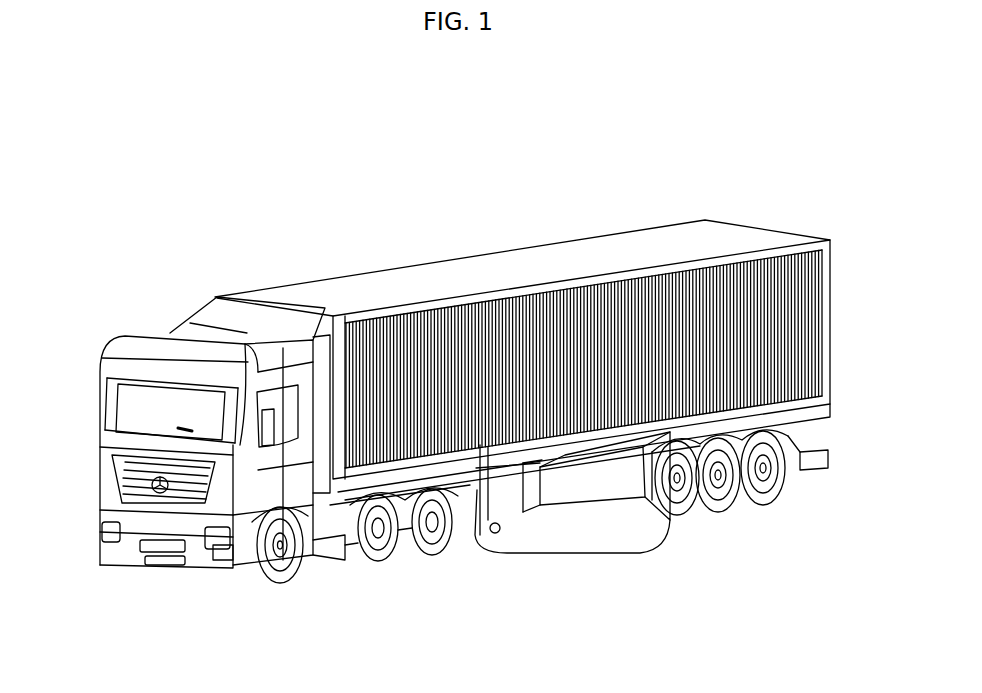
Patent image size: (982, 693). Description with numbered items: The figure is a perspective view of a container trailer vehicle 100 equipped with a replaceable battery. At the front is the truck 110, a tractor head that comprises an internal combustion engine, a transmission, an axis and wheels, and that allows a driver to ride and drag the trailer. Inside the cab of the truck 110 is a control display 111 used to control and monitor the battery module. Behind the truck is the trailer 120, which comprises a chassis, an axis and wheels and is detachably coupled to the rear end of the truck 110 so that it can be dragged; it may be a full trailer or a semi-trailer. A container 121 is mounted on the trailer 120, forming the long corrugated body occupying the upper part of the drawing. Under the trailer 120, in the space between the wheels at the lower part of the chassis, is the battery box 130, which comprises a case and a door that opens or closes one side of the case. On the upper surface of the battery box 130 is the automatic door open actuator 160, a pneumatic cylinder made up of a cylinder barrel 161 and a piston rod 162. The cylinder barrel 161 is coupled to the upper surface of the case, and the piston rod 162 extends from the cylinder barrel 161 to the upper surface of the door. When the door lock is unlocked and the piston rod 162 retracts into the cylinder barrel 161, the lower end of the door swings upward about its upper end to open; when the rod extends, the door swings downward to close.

The container trailer vehicle 100 is at (417, 232).
The truck 110 is at (90, 521).
The control display 111 is at (185, 430).
The trailer 120 is at (838, 433).
The container 121 is at (828, 313).
The battery box 130 is at (578, 557).
The automatic door open actuator 160 is at (513, 617).
The cylinder barrel 161 is at (477, 530).
The piston rod 162 is at (527, 470).